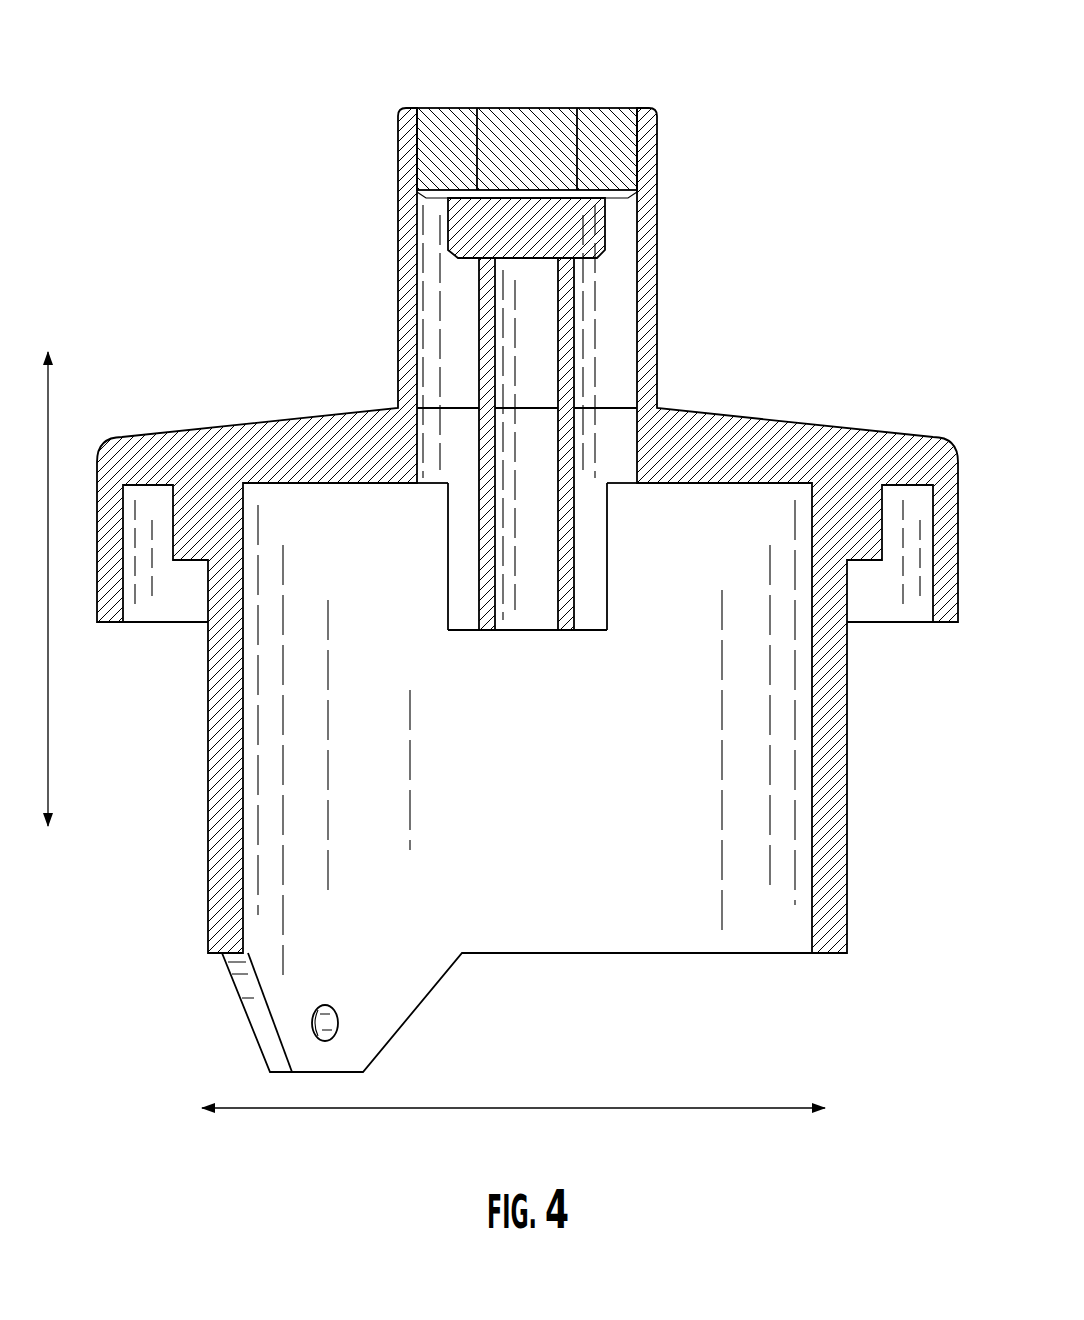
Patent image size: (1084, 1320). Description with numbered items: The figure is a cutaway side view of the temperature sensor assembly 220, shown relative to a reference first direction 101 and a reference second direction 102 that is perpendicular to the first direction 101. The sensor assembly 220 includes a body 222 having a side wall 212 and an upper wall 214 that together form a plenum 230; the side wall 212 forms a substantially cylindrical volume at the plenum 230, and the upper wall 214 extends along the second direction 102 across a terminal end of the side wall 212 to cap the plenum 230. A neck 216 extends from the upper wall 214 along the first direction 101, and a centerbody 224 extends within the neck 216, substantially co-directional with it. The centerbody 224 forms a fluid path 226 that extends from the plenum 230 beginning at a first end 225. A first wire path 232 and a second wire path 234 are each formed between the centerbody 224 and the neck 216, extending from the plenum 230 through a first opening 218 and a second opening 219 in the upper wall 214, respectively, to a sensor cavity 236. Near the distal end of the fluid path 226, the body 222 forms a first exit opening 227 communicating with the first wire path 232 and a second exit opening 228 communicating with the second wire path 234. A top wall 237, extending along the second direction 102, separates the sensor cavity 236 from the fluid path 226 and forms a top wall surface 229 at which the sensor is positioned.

The first direction 101 is at (48, 733).
The second direction 102 is at (718, 1108).
The side wall 212 is at (250, 706).
The upper wall 214 is at (331, 489).
The neck 216 is at (658, 296).
The first opening 218 is at (425, 489).
The second opening 219 is at (633, 489).
The sensor assembly 220 is at (797, 66).
The body 222 is at (764, 437).
The centerbody 224 is at (488, 622).
The first end 225 is at (487, 638).
The fluid path 226 is at (532, 605).
The first exit opening 227 is at (446, 235).
The second exit opening 228 is at (608, 237).
The top wall surface 229 is at (533, 186).
The plenum 230 is at (491, 851).
The first wire path 232 is at (452, 462).
The second wire path 234 is at (611, 463).
The sensor cavity 236 is at (622, 195).
The top wall 237 is at (490, 220).